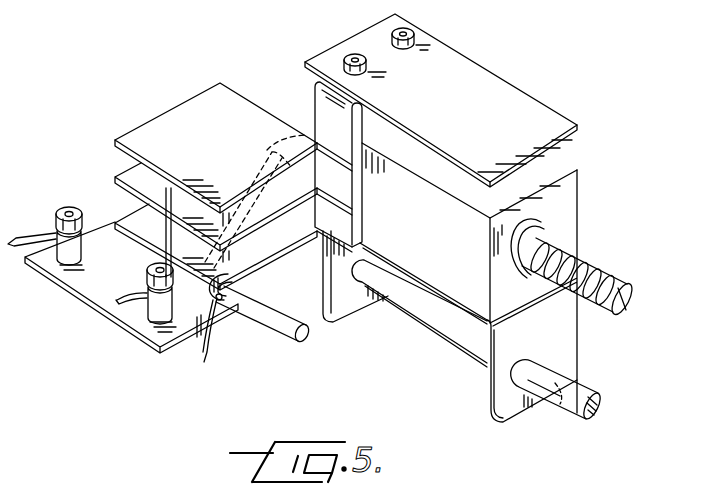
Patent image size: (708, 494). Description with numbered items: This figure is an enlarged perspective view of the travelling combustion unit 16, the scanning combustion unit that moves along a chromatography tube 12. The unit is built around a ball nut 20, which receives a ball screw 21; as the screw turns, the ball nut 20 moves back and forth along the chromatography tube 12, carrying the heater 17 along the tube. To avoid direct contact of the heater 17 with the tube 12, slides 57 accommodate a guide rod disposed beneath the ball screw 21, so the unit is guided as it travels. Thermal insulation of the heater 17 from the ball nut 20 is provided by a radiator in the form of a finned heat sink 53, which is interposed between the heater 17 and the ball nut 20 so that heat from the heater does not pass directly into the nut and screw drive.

The chromatography tube 12 is at (287, 342).
The travelling combustion unit 16 is at (607, 189).
The heater 17 is at (233, 318).
The ball nut 20 is at (568, 213).
The ball screw 21 is at (622, 279).
The finned heat sink 53 is at (128, 137).
The slides 57 is at (565, 345).